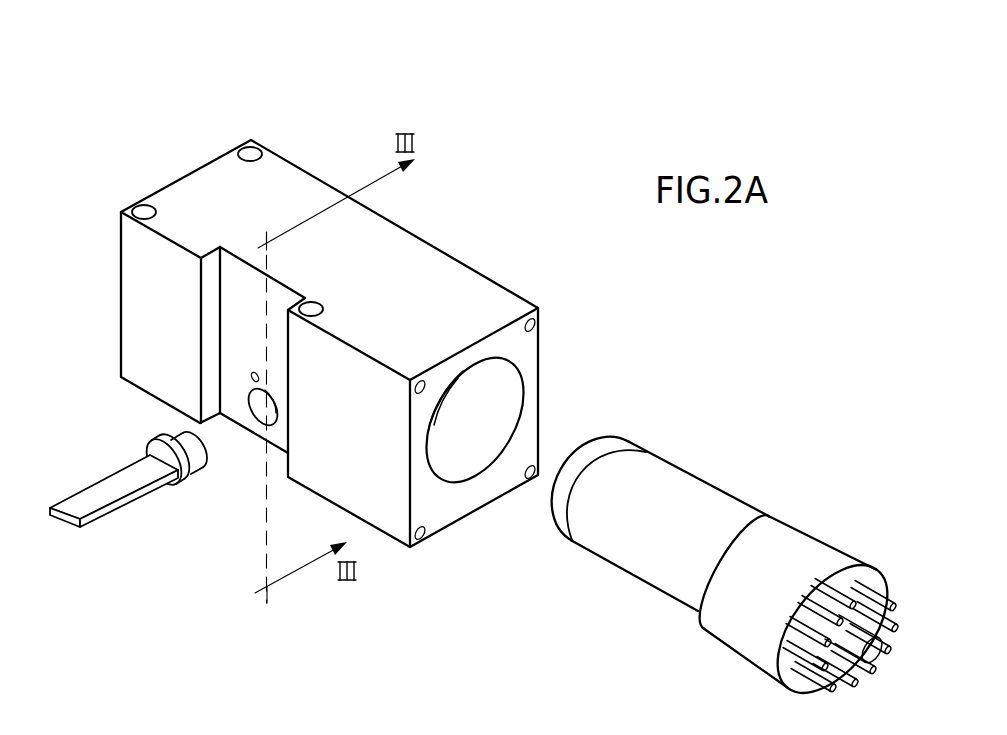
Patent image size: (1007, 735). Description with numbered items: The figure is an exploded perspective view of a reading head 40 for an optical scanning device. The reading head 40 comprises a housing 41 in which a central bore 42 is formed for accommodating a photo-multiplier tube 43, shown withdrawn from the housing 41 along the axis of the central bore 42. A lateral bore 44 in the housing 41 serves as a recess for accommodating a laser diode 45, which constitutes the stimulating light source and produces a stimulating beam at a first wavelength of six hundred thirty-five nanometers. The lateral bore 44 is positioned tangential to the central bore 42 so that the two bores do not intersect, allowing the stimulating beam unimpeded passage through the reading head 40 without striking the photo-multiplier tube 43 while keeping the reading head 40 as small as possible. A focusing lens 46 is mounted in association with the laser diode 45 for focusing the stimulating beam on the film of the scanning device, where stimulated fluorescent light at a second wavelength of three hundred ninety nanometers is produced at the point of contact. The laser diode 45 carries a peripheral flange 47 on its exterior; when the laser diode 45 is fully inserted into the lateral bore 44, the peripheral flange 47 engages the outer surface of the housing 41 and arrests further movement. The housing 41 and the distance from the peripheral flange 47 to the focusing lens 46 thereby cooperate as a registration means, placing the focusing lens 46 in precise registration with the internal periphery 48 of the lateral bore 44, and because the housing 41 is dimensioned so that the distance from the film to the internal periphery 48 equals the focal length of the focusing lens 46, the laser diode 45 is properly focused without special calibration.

The reading head 40 is at (167, 132).
The housing 41 is at (393, 247).
The central bore 42 is at (482, 435).
The photo-multiplier tube 43 is at (673, 488).
The lateral bore 44 is at (258, 407).
The laser diode 45 is at (128, 497).
The focusing lens 46 is at (197, 430).
The peripheral flange 47 is at (180, 487).
The internal periphery 48 is at (272, 425).